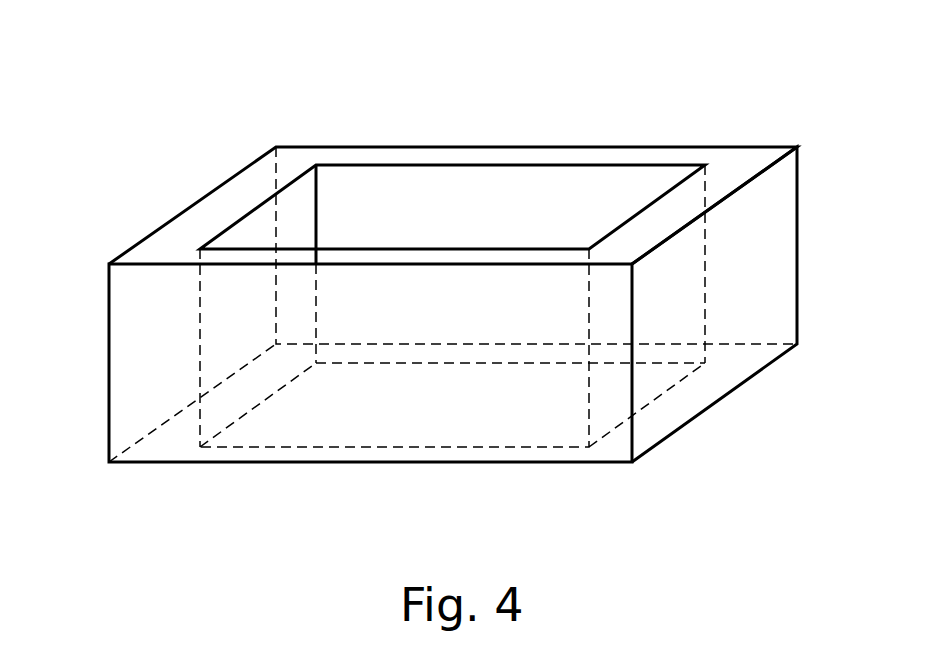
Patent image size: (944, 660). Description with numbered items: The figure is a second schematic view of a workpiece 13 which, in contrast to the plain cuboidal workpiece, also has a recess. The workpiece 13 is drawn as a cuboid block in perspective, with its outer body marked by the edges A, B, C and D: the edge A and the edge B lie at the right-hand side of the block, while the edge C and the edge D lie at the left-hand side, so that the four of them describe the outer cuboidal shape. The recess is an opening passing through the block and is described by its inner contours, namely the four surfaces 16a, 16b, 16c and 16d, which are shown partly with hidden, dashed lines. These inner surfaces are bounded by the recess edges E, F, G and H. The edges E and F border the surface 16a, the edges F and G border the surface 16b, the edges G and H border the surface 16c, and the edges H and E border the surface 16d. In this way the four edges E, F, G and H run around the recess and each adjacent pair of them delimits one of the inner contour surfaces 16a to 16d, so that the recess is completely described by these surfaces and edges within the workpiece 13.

The workpiece 13 is at (730, 127).
The inner contour surface 16a is at (672, 292).
The inner contour surface 16b is at (402, 318).
The inner contour surface 16c is at (217, 310).
The inner contour surface 16d is at (452, 258).
The edge A is at (798, 303).
The edge B is at (633, 436).
The edge C is at (108, 355).
The edge D is at (276, 183).
The edge E is at (705, 240).
The edge F is at (589, 327).
The edge G is at (200, 385).
The edge H is at (317, 187).